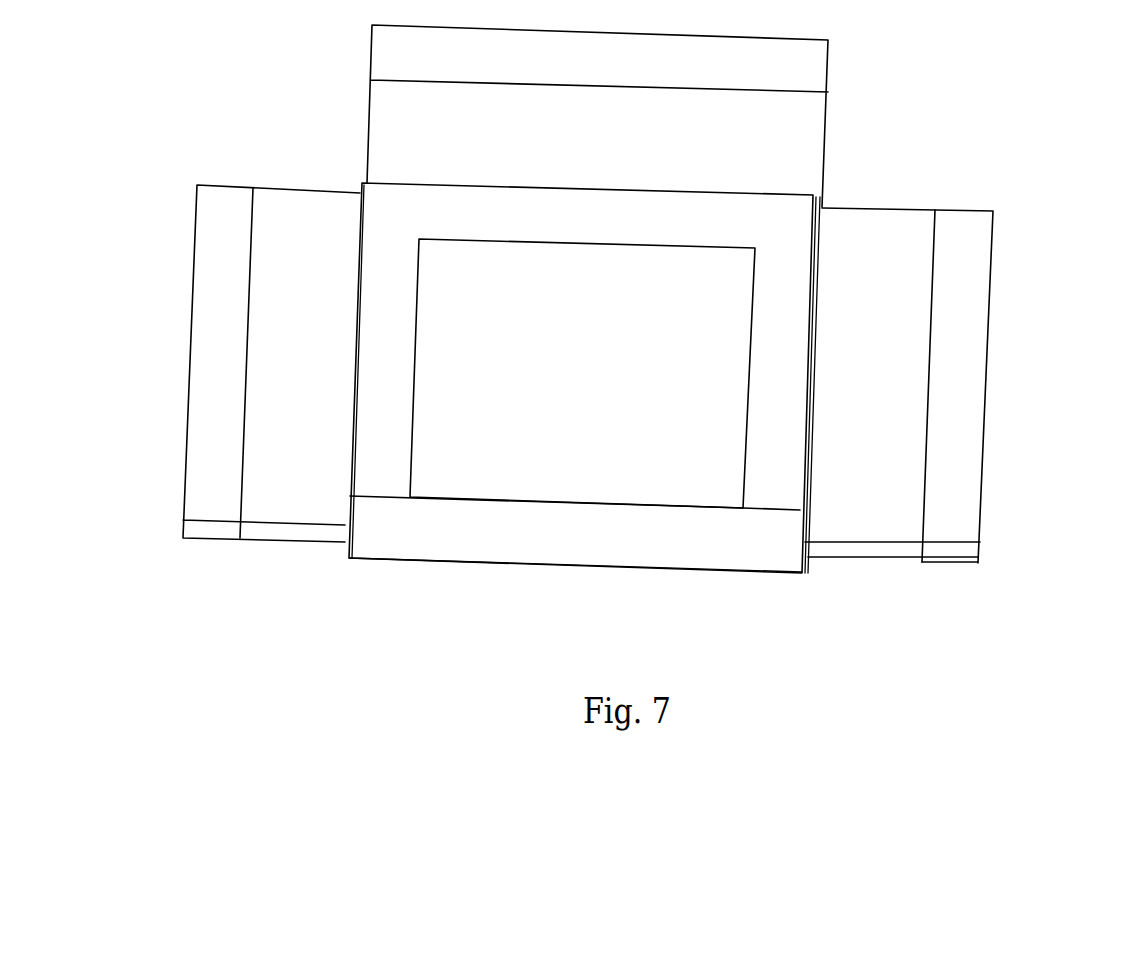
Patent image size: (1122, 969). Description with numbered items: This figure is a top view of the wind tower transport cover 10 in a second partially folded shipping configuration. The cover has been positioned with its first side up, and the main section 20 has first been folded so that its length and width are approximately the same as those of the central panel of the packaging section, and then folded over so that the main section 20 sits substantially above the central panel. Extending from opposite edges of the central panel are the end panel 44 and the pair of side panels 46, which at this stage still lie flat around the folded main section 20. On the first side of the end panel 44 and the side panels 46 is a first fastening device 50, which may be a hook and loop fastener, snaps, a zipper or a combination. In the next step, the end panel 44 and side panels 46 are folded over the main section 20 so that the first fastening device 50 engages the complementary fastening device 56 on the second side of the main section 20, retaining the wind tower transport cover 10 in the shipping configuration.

The wind tower transport cover 10 is at (802, 683).
The main section 20 is at (590, 472).
The end panel 44 is at (388, 115).
The side panels 46 is at (886, 235).
The first fastening device 50 is at (205, 373).
The complementary fastening device 56 is at (385, 472).